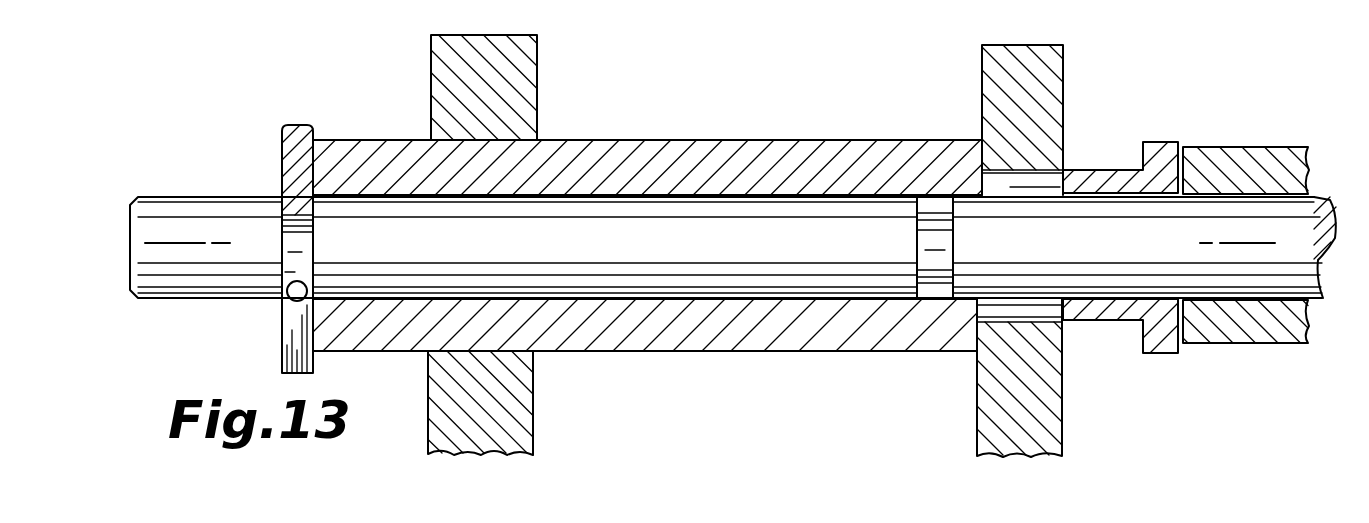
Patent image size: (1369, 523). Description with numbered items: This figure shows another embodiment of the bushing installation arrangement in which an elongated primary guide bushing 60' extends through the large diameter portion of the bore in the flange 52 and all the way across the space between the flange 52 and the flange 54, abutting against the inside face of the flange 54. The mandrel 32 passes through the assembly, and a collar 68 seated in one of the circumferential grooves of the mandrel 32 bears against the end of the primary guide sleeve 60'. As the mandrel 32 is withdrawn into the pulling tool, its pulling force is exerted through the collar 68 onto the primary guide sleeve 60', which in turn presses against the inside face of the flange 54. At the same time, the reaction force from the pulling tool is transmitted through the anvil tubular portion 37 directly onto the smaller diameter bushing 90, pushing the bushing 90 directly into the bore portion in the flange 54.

The mandrel 32 is at (152, 212).
The collar 68 is at (285, 150).
The flange 52 is at (537, 70).
The elongated primary guide bushing 60' is at (647, 185).
The flange 54 is at (982, 80).
The bushing 90 is at (1138, 143).
The anvil tubular portion 37 is at (1225, 147).